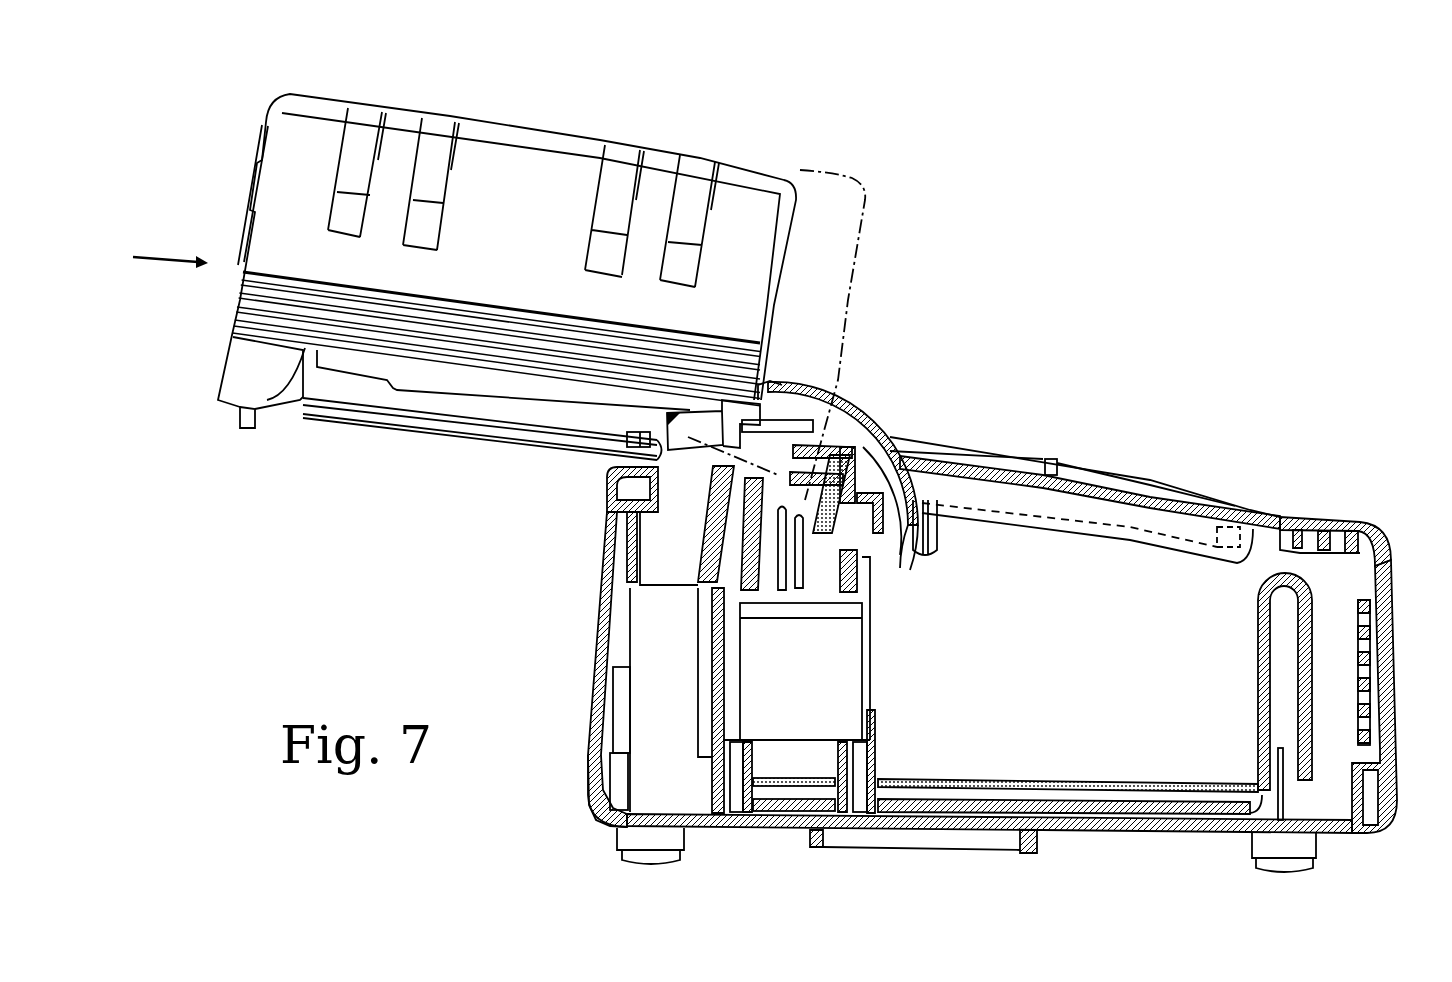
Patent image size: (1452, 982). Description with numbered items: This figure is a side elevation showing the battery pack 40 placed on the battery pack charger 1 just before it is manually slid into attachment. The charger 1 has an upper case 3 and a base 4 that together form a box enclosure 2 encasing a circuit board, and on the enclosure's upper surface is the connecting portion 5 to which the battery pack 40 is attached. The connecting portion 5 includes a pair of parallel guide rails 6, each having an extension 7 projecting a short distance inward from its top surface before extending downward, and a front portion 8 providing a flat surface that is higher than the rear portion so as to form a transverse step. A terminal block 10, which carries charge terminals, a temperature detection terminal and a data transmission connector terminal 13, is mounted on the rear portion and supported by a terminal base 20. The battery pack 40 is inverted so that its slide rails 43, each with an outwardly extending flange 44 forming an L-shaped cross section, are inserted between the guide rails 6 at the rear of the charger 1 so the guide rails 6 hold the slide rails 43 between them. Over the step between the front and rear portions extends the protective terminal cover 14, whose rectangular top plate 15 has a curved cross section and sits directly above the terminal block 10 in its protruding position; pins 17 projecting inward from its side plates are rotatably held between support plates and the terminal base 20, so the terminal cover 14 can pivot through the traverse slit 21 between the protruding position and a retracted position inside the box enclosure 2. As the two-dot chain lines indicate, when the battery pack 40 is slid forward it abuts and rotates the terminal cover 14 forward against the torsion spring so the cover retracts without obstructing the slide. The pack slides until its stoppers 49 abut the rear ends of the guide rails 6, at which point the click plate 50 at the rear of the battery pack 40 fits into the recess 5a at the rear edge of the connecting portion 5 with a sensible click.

The battery pack charger 1 is at (982, 600).
The box enclosure 2 is at (1316, 515).
The upper case 3 is at (1392, 586).
The base 4 is at (1127, 832).
The connecting portion 5 is at (1085, 452).
The recess 5a is at (607, 472).
The guide rail 6 is at (940, 435).
The extension 7 is at (967, 455).
The front portion 8 is at (1097, 482).
The terminal block 10 is at (737, 492).
The data transmission connector terminal 13 is at (853, 513).
The terminal cover 14 is at (845, 400).
The top plate 15 is at (800, 395).
The pin 17 is at (765, 485).
The terminal base 20 is at (860, 605).
The traverse slit 21 is at (880, 433).
The battery pack 40 is at (586, 301).
The slide rail 43 is at (437, 425).
The flange 44 is at (475, 418).
The stopper 49 is at (300, 405).
The click plate 50 is at (245, 428).